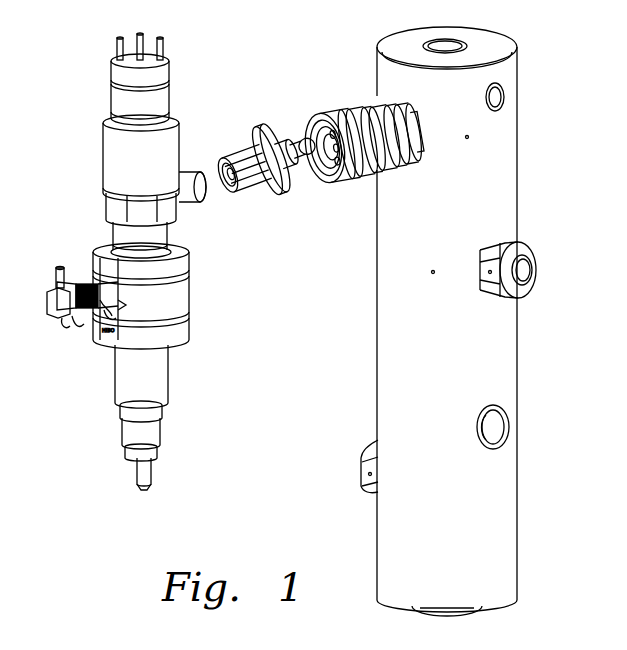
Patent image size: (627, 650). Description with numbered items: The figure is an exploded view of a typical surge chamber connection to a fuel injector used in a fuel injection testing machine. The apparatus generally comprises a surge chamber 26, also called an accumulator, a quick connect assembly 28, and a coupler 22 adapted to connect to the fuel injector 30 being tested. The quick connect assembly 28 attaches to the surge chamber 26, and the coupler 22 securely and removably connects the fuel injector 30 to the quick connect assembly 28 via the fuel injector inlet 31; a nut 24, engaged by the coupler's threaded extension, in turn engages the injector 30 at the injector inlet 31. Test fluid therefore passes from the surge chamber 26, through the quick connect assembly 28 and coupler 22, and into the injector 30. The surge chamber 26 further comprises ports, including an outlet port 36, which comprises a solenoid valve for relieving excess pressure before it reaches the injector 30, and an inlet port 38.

The coupler 22 is at (281, 193).
The nut 24 is at (237, 197).
The surge chamber 26 is at (517, 148).
The quick connect assembly 28 is at (347, 110).
The fuel injector 30 is at (172, 92).
The fuel injector inlet 31 is at (190, 167).
The outlet port 36 is at (537, 265).
The inlet port 38 is at (358, 473).